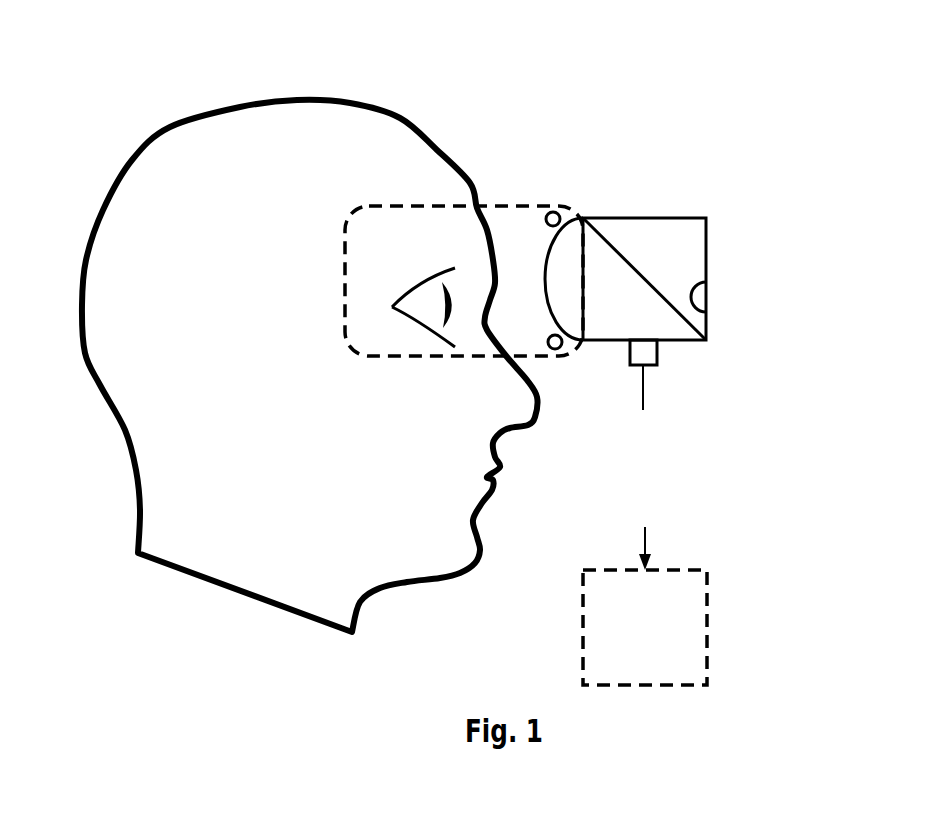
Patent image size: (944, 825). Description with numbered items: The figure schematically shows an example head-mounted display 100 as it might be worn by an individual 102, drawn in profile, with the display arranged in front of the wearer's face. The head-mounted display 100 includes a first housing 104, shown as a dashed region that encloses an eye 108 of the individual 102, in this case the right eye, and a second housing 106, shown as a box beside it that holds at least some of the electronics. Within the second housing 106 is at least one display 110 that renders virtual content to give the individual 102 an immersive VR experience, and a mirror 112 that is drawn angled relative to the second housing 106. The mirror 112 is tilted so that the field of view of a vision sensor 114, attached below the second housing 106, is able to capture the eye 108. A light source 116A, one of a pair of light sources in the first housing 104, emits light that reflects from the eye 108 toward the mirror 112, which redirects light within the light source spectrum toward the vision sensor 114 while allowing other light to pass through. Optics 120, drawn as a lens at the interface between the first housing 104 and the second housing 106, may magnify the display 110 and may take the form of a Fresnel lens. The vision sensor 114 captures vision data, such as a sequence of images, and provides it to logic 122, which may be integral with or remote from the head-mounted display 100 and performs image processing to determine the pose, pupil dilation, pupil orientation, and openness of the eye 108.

The head-mounted display 100 is at (646, 265).
The individual 102 is at (308, 97).
The first housing 104 is at (400, 357).
The second housing 106 is at (683, 218).
The eye 108 is at (405, 278).
The display 110 is at (706, 313).
The mirror 112 is at (612, 245).
The vision sensor 114 is at (658, 355).
The light source 116A is at (553, 211).
The optics 120 is at (547, 250).
The logic 122 is at (645, 525).